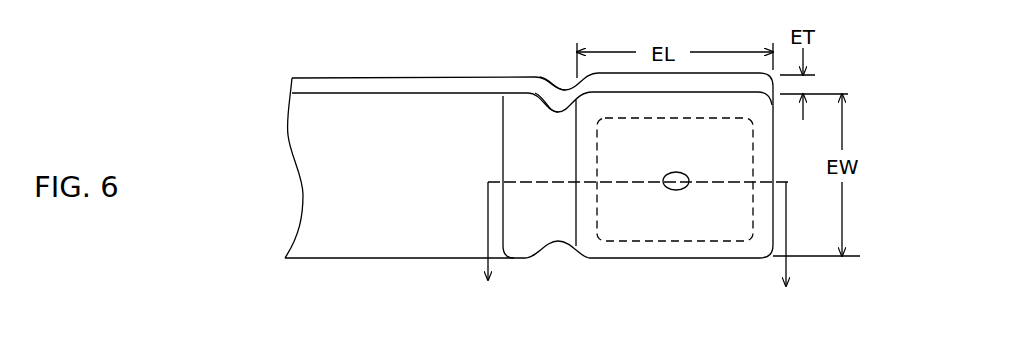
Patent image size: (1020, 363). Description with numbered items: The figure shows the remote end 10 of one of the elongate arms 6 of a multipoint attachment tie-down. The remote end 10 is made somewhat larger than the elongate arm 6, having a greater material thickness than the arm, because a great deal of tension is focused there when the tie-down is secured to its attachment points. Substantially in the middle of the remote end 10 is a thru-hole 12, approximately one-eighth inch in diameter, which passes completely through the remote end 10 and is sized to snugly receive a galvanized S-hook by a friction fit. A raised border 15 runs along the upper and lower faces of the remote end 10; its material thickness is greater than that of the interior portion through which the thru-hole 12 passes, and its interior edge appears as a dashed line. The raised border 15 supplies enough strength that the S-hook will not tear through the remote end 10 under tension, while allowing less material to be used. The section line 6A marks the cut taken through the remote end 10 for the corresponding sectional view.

The elongate arm 6 is at (407, 236).
The section line 6A is at (636, 255).
The remote end 10 is at (678, 252).
The thru-hole 12 is at (667, 189).
The raised border 15 is at (582, 243).